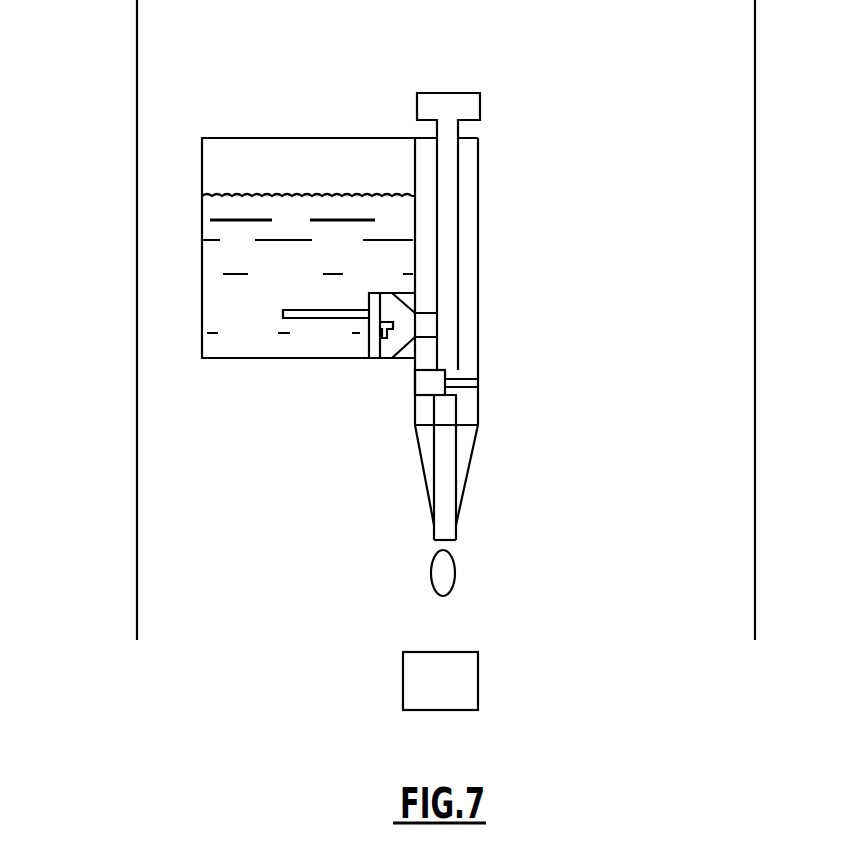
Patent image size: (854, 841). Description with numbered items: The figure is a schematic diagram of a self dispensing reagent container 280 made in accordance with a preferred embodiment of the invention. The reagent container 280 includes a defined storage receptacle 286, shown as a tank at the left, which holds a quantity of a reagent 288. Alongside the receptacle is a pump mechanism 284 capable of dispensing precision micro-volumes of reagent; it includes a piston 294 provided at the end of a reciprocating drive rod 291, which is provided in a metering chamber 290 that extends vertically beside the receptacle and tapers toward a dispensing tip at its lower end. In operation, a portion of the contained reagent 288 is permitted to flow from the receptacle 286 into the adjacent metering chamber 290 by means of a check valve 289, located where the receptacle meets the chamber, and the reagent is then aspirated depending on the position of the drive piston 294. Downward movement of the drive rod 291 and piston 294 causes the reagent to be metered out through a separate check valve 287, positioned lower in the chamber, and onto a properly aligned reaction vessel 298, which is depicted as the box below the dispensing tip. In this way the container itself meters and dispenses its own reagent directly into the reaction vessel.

The reagent container 280 is at (67, 64).
The pump mechanism 284 is at (480, 105).
The storage receptacle 286 is at (210, 178).
The reagent 288 is at (202, 300).
The check valve 289 is at (373, 358).
The metering chamber 290 is at (459, 325).
The reciprocating drive rod 291 is at (459, 207).
The piston 294 is at (459, 175).
The check valve 287 is at (478, 383).
The reaction vessel 298 is at (478, 685).